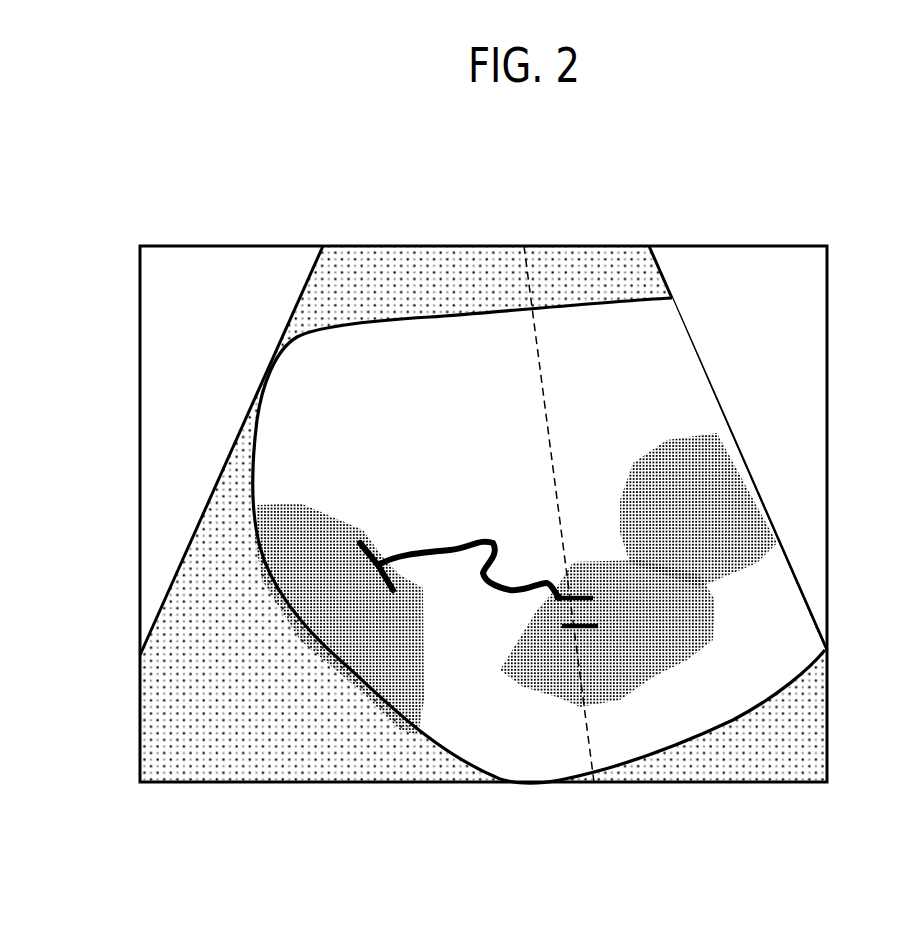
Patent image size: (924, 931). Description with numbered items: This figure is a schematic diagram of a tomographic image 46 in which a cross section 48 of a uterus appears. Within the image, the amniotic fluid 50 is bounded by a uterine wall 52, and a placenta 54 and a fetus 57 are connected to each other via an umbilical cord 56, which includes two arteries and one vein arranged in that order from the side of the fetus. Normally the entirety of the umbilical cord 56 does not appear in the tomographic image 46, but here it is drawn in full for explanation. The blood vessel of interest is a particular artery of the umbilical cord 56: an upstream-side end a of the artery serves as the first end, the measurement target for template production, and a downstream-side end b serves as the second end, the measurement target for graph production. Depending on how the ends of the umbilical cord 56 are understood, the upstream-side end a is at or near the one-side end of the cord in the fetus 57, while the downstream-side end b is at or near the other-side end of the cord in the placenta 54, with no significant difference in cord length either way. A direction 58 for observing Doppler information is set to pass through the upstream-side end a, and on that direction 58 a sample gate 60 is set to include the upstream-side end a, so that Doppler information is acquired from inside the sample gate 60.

The tomographic image 46 is at (564, 233).
The cross section of a uterus 48 is at (721, 357).
The amniotic fluid 50 is at (653, 323).
The uterine wall 52 is at (463, 300).
The placenta 54 is at (320, 523).
The umbilical cord 56 is at (425, 535).
The fetus 57 is at (733, 488).
The direction for observing Doppler information 58 is at (525, 288).
The sample gate 60 is at (593, 603).
The upstream-side end a is at (557, 615).
The downstream-side end b is at (405, 585).